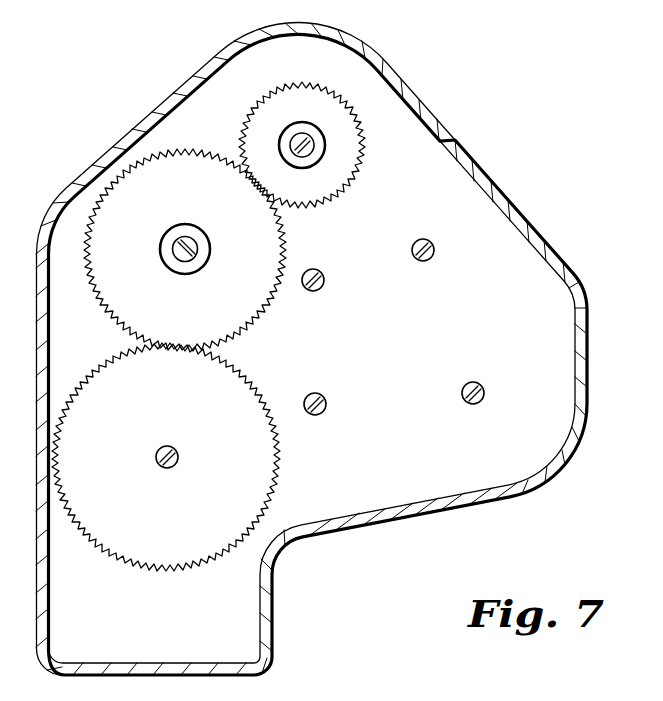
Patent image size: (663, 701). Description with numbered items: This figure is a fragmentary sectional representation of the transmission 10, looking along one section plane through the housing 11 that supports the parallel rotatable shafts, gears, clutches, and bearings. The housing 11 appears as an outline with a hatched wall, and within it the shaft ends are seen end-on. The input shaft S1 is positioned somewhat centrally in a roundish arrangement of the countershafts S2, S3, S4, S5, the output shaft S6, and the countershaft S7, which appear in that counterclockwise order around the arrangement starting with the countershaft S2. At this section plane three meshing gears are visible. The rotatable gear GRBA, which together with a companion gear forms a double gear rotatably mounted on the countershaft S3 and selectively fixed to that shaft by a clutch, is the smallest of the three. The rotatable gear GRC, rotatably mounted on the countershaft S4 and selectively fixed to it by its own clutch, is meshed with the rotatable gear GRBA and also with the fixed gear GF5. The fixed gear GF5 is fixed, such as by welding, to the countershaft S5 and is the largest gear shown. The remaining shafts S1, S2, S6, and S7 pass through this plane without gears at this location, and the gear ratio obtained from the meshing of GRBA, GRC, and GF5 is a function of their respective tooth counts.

The transmission 10 is at (500, 145).
The housing 11 is at (424, 524).
The input shaft S1 is at (322, 289).
The countershaft S2 is at (433, 258).
The countershaft S3 is at (325, 145).
The countershaft S4 is at (188, 263).
The countershaft S5 is at (162, 467).
The output shaft S6 is at (326, 409).
The countershaft S7 is at (484, 392).
The rotatable gear GRBA is at (353, 181).
The rotatable gear GRC is at (287, 232).
The fixed gear GF5 is at (272, 452).